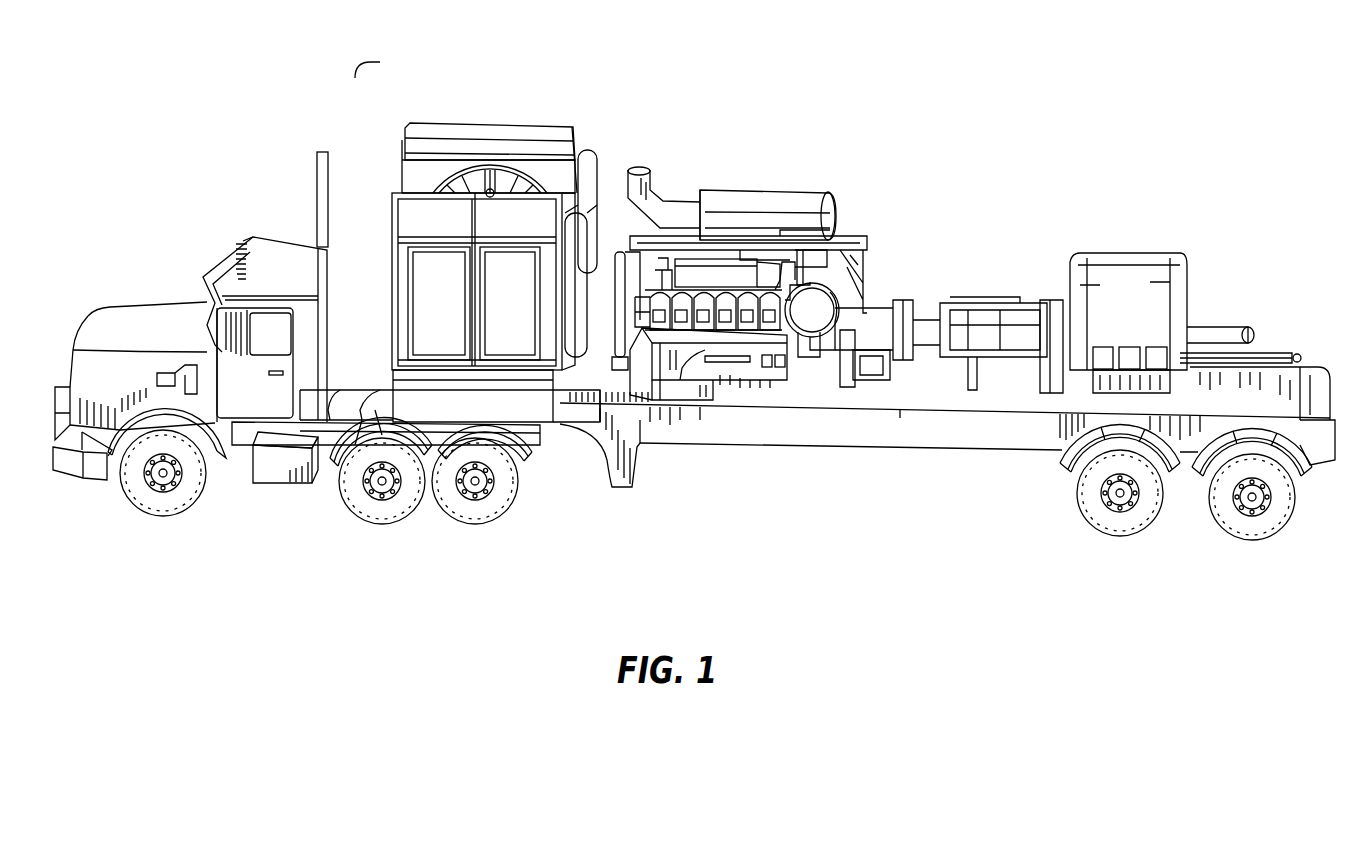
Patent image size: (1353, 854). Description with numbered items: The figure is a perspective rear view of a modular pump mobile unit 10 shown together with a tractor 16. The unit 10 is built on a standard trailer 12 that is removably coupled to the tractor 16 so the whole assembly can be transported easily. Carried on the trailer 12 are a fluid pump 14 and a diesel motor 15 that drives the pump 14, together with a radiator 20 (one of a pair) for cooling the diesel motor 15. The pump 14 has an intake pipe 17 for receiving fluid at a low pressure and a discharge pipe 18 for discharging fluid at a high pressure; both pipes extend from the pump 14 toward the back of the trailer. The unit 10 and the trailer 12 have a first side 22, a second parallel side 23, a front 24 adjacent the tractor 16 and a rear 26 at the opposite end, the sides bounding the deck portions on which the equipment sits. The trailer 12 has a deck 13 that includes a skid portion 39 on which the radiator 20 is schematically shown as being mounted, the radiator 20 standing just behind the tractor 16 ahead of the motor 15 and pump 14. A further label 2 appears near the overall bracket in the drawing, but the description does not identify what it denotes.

The modular pump mobile unit 10 is at (355, 78).
The truck-trailer unit 2 is at (367, 91).
The standard trailer 12 is at (850, 442).
The deck 13 is at (783, 385).
The fluid pump 14 is at (1122, 278).
The diesel motor 15 is at (720, 250).
The tractor 16 is at (292, 240).
The intake pipe 17 is at (1225, 335).
The discharge pipe 18 is at (1265, 355).
The radiator 20 is at (374, 221).
The first side 22 is at (985, 433).
The second parallel side 23 is at (1300, 353).
The front 24 is at (357, 436).
The rear 26 is at (1335, 440).
The skid portion 39 is at (573, 393).